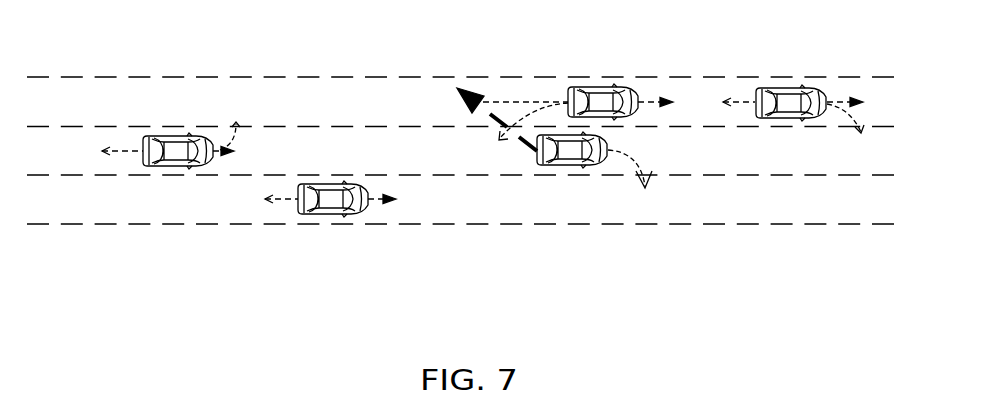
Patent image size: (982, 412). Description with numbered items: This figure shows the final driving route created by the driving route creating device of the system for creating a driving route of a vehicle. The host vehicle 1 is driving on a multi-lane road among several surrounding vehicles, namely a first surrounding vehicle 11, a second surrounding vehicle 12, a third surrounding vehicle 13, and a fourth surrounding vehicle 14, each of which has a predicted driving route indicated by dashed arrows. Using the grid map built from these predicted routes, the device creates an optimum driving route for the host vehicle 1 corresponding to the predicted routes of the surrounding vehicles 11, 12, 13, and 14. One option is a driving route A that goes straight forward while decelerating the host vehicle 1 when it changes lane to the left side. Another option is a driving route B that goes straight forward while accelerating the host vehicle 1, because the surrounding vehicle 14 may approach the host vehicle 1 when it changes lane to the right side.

The host vehicle 1 is at (582, 166).
The first surrounding vehicle 11 is at (786, 88).
The second surrounding vehicle 12 is at (600, 87).
The third surrounding vehicle 13 is at (193, 137).
The fourth surrounding vehicle 14 is at (343, 213).
The driving route A is at (468, 85).
The driving route B is at (625, 153).